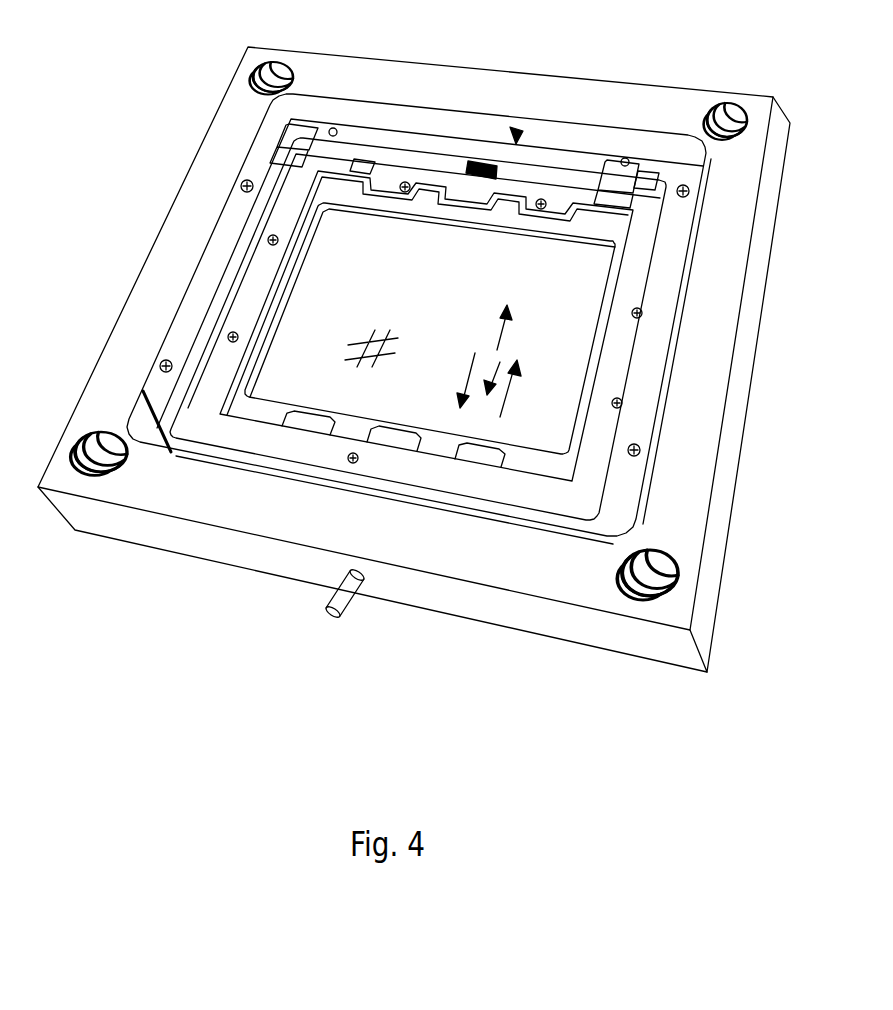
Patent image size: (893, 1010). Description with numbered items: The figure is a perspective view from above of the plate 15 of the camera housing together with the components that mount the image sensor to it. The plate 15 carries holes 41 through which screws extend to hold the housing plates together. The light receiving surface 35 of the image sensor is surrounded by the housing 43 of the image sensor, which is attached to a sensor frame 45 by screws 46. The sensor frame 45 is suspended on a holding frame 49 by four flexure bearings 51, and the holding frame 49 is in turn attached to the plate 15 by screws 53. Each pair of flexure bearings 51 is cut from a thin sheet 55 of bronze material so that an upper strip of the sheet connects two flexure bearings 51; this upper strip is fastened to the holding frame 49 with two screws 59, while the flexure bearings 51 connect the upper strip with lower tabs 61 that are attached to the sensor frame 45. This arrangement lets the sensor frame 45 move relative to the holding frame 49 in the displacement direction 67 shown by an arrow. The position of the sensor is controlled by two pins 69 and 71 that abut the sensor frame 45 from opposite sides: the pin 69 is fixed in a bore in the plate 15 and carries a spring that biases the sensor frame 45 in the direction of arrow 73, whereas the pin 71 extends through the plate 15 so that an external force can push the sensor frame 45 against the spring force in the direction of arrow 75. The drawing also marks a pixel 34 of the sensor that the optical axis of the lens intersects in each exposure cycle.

The plate 15 is at (712, 650).
The pixel 34 is at (358, 346).
The light receiving surface 35 is at (440, 318).
The holes 41 is at (257, 72).
The housing 43 is at (572, 246).
The sensor frame 45 is at (462, 210).
The screws 46 is at (404, 196).
The holding frame 49 is at (177, 452).
The flexure bearings 51 is at (348, 150).
The screws 53 is at (243, 185).
The sheet 55 is at (520, 132).
The screws 59 is at (331, 128).
The lower tabs 61 is at (363, 172).
The displacement direction 67 is at (508, 345).
The pin 69 is at (482, 160).
The pin 71 is at (347, 617).
The arrow 73 is at (466, 372).
The arrow 75 is at (516, 398).